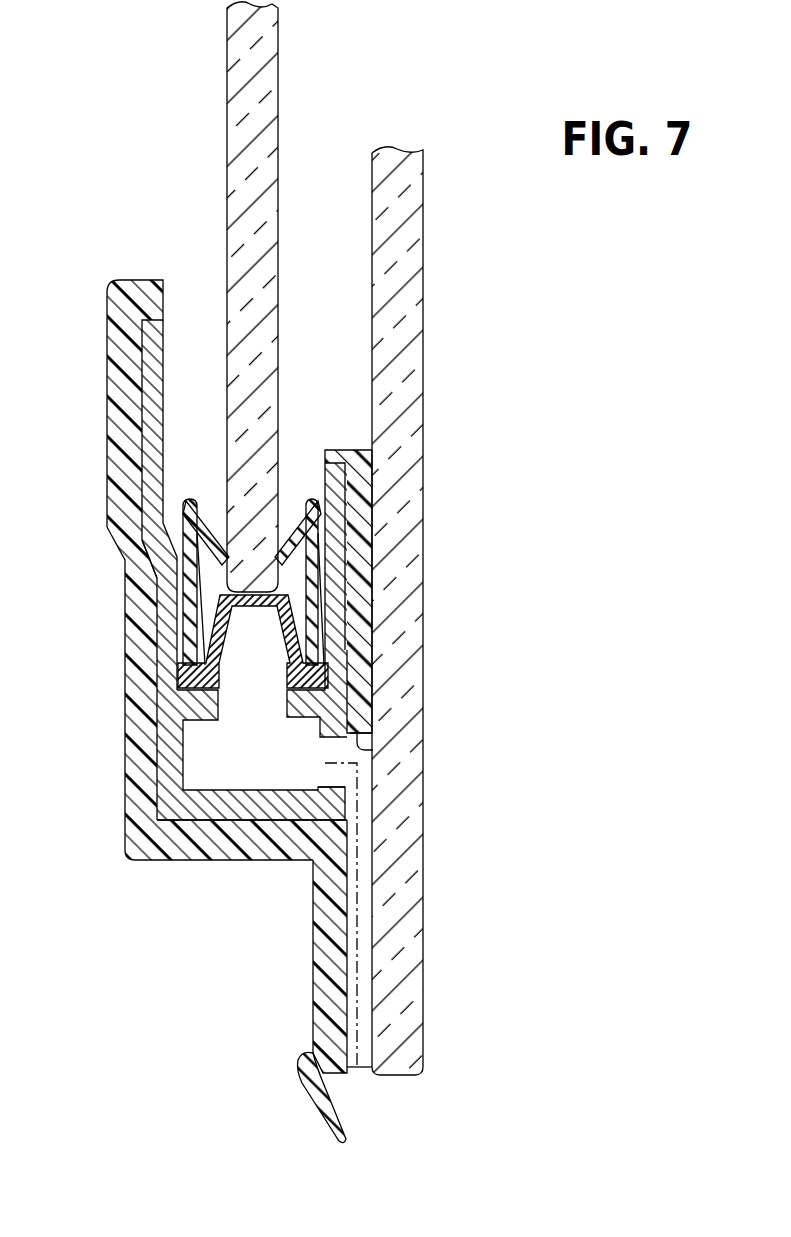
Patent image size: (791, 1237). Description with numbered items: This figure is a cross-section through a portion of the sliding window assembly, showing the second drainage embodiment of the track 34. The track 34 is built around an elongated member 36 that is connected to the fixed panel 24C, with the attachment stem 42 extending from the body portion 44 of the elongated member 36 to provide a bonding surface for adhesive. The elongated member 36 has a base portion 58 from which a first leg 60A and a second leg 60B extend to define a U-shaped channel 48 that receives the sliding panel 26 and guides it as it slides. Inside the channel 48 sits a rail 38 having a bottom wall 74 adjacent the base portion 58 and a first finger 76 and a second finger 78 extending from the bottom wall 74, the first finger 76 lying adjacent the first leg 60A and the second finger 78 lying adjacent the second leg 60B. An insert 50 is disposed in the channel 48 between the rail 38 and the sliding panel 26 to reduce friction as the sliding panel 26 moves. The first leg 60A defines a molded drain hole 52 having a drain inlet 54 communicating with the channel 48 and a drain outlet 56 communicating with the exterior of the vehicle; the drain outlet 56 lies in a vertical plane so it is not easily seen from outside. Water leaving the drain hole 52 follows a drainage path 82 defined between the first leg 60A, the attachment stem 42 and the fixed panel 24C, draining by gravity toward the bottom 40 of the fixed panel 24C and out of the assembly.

The sliding panel 26 is at (268, 103).
The fixed panel 24C is at (405, 250).
The track 34 is at (93, 402).
The rail 38 is at (153, 398).
The channel 48 is at (404, 569).
The first leg 60A is at (360, 504).
The second leg 60B is at (145, 604).
The first finger 76 is at (333, 582).
The second finger 78 is at (163, 648).
The insert 50 is at (215, 663).
The elongated member 36 is at (196, 711).
The drain hole 52 is at (358, 745).
The drain inlet 54 is at (333, 744).
The base portion 58 is at (244, 570).
The bottom wall 74 is at (273, 810).
The body portion 44 is at (128, 873).
The drainage path 82 is at (358, 873).
The attachment stem 42 is at (308, 970).
The drain outlet 56 is at (374, 1083).
The bottom 40 is at (425, 643).